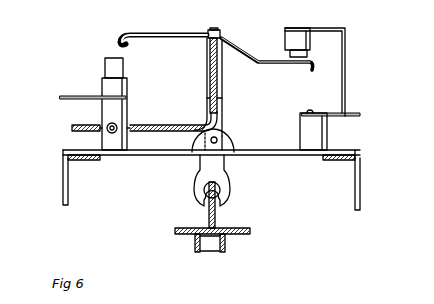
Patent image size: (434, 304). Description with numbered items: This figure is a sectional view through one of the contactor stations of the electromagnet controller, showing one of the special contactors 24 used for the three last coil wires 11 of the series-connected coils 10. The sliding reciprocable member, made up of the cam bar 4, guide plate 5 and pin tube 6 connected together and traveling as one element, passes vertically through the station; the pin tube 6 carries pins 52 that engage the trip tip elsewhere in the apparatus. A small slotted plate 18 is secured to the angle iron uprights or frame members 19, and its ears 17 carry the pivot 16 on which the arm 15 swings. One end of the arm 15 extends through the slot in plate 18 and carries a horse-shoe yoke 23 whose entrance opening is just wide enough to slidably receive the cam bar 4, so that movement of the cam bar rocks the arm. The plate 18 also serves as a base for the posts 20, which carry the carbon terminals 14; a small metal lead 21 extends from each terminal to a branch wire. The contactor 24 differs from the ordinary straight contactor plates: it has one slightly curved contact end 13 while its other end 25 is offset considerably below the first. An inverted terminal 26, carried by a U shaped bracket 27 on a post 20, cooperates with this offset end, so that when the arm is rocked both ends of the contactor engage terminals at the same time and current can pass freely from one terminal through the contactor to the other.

The cam bar 4 is at (207, 210).
The guide plate 5 is at (250, 228).
The pin tube 6 is at (195, 237).
The coil 10 is at (213, 140).
The coil wire 11 is at (171, 125).
The contact end 13 is at (126, 32).
The carbon terminal 14 is at (106, 63).
The arm 15 is at (223, 103).
The pivot 16 is at (217, 139).
The ear 17 is at (232, 143).
The slotted plate 18 is at (280, 155).
The upright 19 is at (70, 184).
The post 20 is at (100, 113).
The metal lead 21 is at (92, 97).
The horse-shoe yoke 23 is at (230, 197).
The contactor 24 is at (192, 36).
The offset end 25 is at (281, 72).
The terminal 26 is at (306, 52).
The U shaped bracket 27 is at (347, 63).
The pin 52 is at (207, 31).